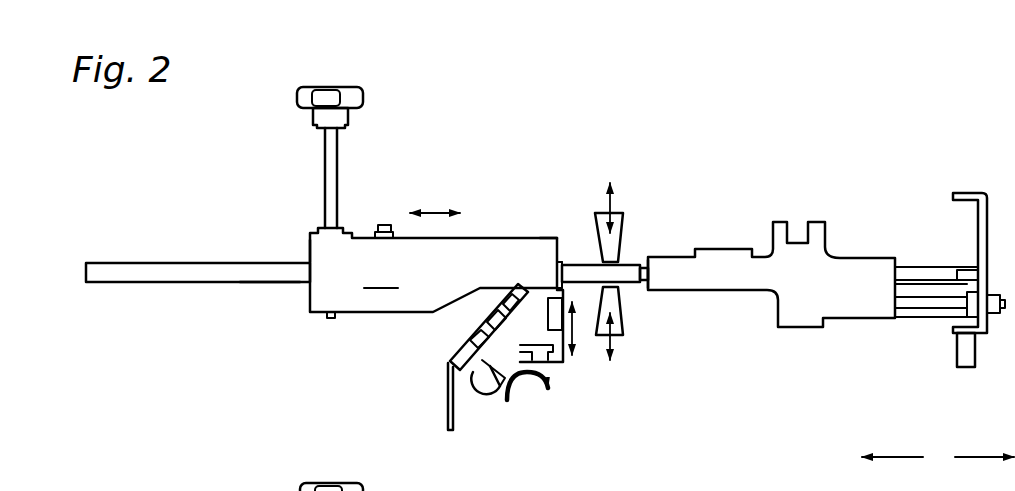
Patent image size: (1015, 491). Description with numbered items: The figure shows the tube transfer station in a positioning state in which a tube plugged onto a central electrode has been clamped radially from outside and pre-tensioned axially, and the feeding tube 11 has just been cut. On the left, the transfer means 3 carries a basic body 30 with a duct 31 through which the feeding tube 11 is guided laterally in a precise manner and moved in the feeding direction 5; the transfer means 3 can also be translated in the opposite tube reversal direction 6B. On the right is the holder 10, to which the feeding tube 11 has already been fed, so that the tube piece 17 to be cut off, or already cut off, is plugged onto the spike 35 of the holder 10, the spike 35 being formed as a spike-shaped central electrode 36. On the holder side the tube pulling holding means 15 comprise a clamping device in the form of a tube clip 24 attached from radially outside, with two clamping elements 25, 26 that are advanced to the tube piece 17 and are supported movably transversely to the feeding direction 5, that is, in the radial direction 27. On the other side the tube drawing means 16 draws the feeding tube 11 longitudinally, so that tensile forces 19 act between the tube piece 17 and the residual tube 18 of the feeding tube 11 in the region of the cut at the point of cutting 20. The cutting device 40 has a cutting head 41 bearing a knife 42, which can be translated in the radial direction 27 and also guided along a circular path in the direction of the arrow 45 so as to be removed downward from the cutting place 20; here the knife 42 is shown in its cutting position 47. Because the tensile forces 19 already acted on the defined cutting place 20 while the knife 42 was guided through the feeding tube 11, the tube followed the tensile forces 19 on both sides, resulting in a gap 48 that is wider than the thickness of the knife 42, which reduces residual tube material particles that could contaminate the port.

The transfer means 3 is at (511, 135).
The feeding direction 5 is at (980, 455).
The tube reversal direction 6B is at (907, 455).
The holder 10 is at (874, 199).
The feeding tube 11 is at (150, 284).
The tube pulling holding means 15 is at (643, 170).
The tube drawing means 16 is at (430, 150).
The tube piece 17 is at (628, 268).
The residual tube 18 is at (279, 284).
The tensile forces 19 is at (437, 213).
The point of cutting 20 is at (617, 231).
The tube clip 24 is at (610, 405).
The clamping element 25 is at (596, 225).
The clamping element 26 is at (623, 330).
The radial direction 27 is at (612, 200).
The basic body 30 is at (436, 271).
The duct 31 is at (307, 262).
The spike 35 is at (647, 258).
The spike-shaped central electrode 36 is at (645, 291).
The cutting device 40 is at (444, 357).
The cutting head 41 is at (478, 325).
The knife 42 is at (575, 265).
The arrow direction 45 is at (523, 388).
The cutting position 47 is at (548, 258).
The gap 48 is at (557, 271).